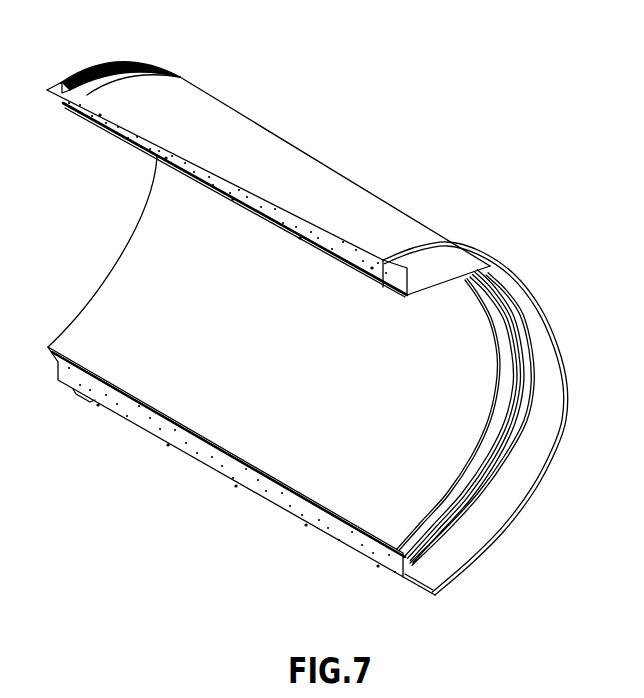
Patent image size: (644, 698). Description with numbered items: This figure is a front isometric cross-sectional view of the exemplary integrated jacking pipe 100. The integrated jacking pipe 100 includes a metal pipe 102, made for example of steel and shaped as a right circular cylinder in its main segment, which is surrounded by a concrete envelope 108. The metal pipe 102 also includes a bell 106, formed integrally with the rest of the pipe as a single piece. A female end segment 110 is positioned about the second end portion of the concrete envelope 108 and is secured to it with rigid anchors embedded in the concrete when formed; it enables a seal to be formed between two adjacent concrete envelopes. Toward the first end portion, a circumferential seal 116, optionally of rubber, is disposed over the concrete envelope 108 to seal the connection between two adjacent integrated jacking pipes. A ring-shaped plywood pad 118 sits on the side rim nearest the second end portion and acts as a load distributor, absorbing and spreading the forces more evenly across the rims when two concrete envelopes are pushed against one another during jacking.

The integrated jacking pipe 100 is at (332, 305).
The metal pipe 102 is at (298, 369).
The bell 106 is at (497, 427).
The concrete envelope 108 is at (333, 164).
The female end segment 110 is at (490, 266).
The circumferential seal 116 is at (88, 74).
The ring-shaped plywood pad 118 is at (472, 507).